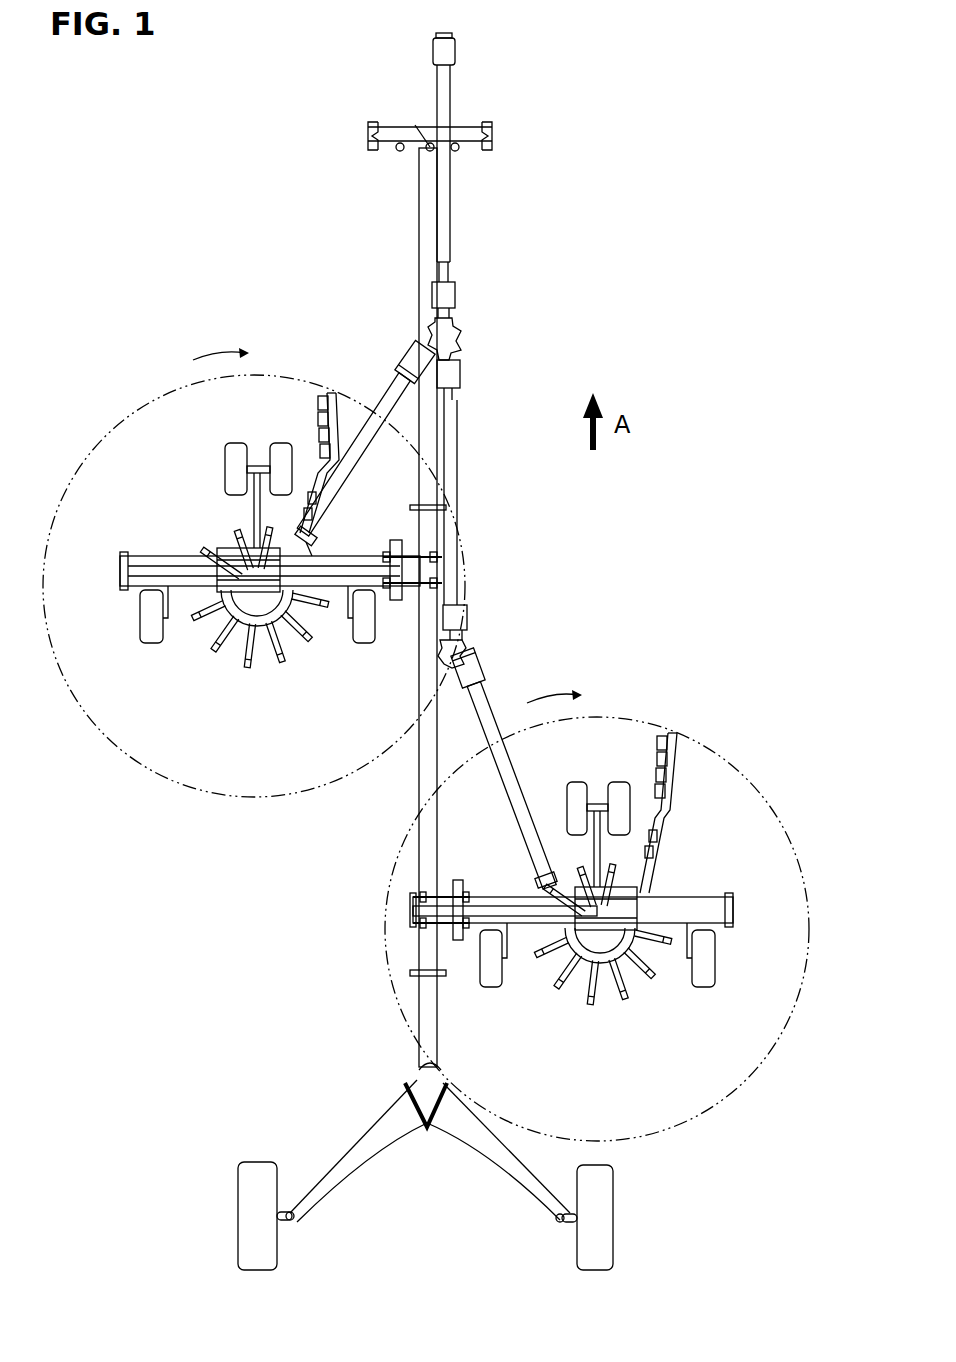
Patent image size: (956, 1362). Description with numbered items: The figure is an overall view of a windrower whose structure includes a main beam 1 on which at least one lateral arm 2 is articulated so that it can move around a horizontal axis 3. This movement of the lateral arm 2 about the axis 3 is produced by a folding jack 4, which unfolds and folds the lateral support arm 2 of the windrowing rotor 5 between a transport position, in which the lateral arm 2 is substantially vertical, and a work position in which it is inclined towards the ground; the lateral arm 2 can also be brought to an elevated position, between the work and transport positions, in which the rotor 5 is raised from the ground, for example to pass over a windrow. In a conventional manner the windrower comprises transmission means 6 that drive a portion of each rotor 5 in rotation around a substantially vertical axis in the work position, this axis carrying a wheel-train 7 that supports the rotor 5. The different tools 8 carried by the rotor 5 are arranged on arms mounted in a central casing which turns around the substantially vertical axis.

The main beam 1 is at (422, 788).
The lateral arm 2 is at (138, 575).
The horizontal axis 3 is at (460, 882).
The folding jack 4 is at (500, 910).
The windrowing rotor 5 is at (134, 773).
The transmission means 6 is at (492, 712).
The wheel-train 7 is at (575, 785).
The tools 8 is at (670, 735).